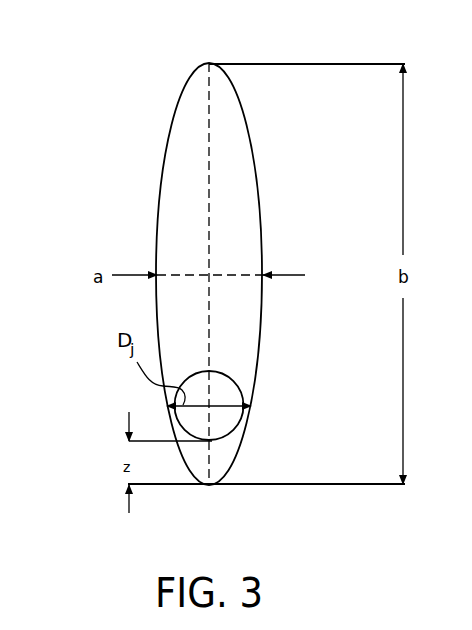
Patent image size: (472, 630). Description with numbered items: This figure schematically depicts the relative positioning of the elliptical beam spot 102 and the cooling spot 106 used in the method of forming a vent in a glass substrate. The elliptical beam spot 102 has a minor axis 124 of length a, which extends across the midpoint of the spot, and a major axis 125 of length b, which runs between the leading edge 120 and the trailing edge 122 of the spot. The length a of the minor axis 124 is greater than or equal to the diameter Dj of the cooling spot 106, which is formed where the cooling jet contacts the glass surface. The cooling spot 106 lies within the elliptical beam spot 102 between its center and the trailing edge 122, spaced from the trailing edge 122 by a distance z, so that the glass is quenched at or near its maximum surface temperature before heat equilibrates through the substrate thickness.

The elliptical beam spot 102 is at (146, 150).
The cooling spot 106 is at (237, 379).
The leading edge 120 is at (305, 64).
The trailing edge 122 is at (305, 484).
The minor axis 124 is at (192, 272).
The major axis 125 is at (211, 148).